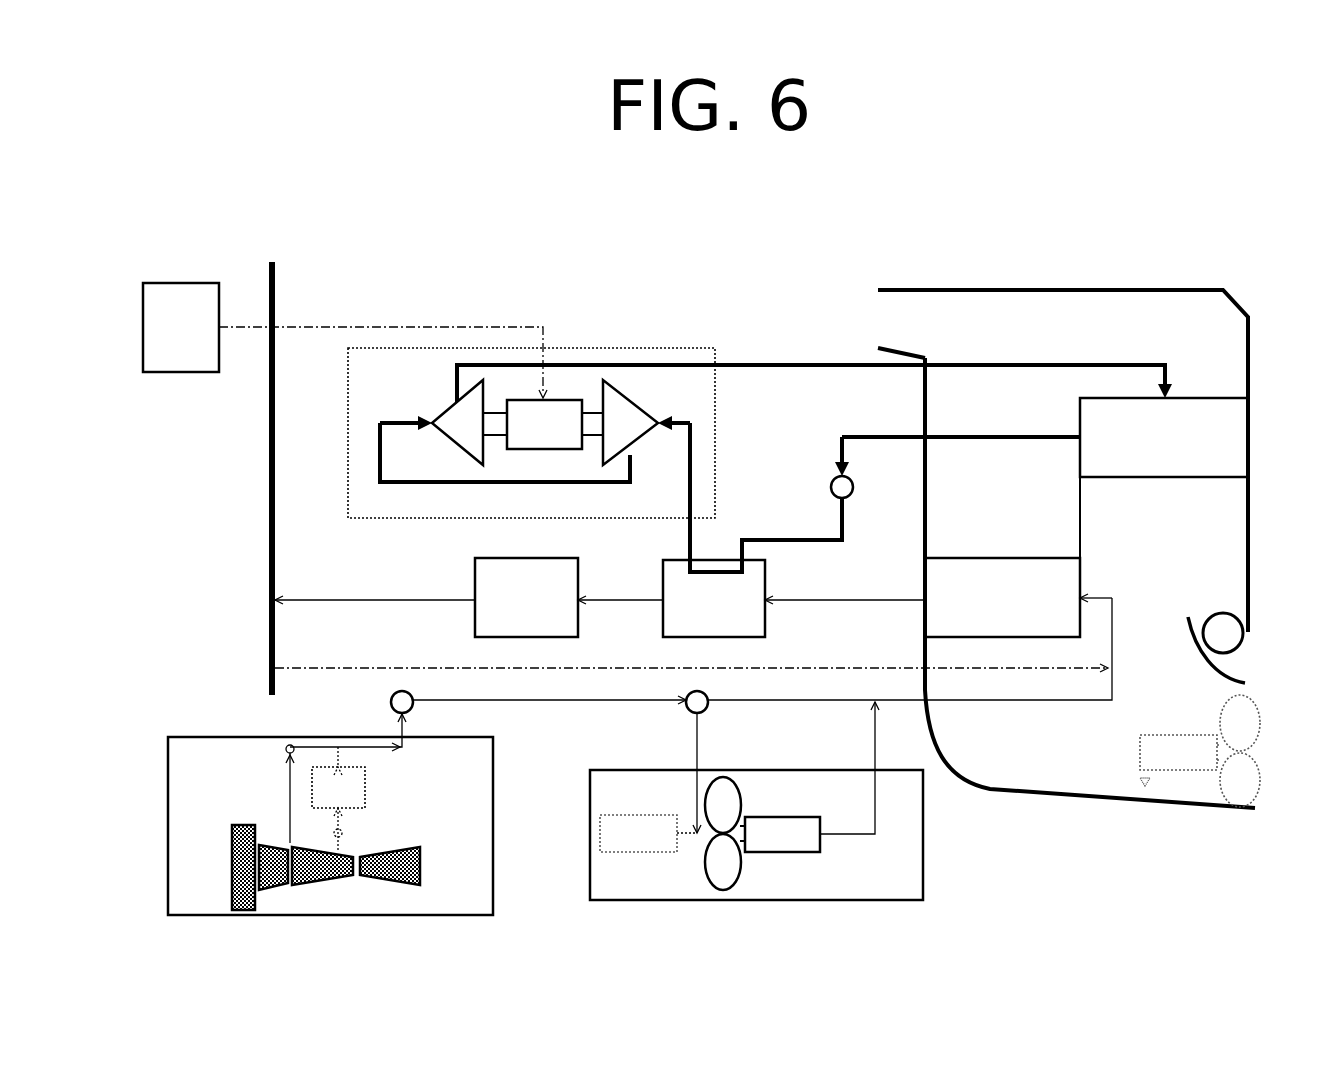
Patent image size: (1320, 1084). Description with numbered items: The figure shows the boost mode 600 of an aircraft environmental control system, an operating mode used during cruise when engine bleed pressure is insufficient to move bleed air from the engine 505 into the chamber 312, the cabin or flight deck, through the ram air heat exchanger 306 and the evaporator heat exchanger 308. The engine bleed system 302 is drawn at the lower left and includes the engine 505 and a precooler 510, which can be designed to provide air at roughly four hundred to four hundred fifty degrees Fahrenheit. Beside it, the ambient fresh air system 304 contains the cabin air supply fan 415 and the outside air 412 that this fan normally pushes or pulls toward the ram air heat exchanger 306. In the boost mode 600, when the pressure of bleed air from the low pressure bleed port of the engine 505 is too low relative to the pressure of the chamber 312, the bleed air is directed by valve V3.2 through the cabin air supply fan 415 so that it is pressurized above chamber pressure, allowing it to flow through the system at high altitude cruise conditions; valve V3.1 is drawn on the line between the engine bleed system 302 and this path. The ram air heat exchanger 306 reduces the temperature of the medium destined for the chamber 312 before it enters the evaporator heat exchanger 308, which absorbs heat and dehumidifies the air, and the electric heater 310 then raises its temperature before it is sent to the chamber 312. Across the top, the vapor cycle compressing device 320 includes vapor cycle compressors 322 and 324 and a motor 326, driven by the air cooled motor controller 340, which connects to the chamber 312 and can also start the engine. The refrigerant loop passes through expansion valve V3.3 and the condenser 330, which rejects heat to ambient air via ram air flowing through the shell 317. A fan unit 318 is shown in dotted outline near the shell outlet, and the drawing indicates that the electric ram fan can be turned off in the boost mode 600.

The boost mode 600 is at (1204, 145).
The chamber 312 is at (269, 264).
The air cooled motor controller 340 is at (201, 338).
The vapor cycle compressing device 320 is at (676, 346).
The vapor cycle compressor 324 is at (481, 435).
The motor 326 is at (564, 435).
The vapor cycle compressor 322 is at (646, 435).
The shell 317 is at (1060, 288).
The condenser 330 is at (1184, 449).
The expansion valve V3.3 is at (832, 481).
The valve V3.2 is at (687, 699).
The valve V3.1 is at (392, 699).
The evaporator heat exchanger 308 is at (734, 611).
The electric heater 310 is at (546, 611).
The ram air heat exchanger 306 is at (1022, 611).
The engine bleed system 302 is at (240, 738).
The ambient fresh air system 304 is at (607, 770).
The precooler 510 is at (395, 788).
The engine 505 is at (474, 872).
The outside air 412 is at (648, 833).
The cabin air supply fan 415 is at (853, 859).
The fan unit 318 is at (1130, 797).